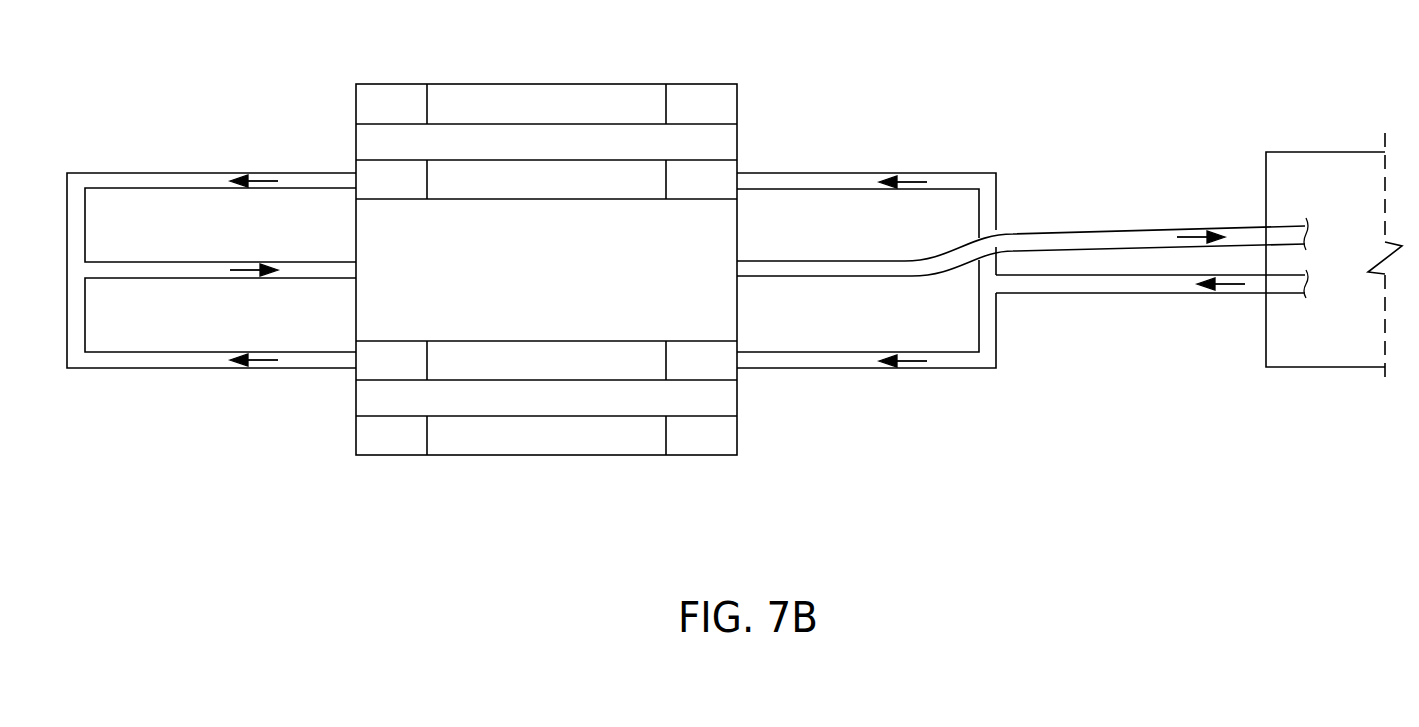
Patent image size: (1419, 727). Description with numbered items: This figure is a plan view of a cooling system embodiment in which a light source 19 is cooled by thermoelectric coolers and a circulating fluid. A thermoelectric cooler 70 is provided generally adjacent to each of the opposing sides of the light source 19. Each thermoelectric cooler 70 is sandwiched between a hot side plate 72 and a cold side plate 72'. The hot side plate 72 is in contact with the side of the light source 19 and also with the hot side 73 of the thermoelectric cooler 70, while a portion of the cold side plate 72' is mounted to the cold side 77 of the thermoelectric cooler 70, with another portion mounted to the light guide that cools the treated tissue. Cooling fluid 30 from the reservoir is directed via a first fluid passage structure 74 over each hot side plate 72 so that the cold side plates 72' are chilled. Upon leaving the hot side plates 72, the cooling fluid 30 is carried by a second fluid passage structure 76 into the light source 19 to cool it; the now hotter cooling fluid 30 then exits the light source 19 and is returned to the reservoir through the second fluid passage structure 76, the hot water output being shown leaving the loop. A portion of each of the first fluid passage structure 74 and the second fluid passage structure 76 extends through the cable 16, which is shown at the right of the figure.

The cable 16 is at (1328, 162).
The light source 19 is at (356, 313).
The cooling fluid 30 is at (248, 267).
The thermoelectric cooler 70 is at (356, 142).
The hot side plate 72 is at (695, 270).
The cold side plate 72' is at (617, 298).
The hot side 73 is at (390, 162).
The first fluid passage structure 74 is at (1107, 295).
The second fluid passage structure 76 is at (175, 172).
The cold side 77 is at (698, 123).